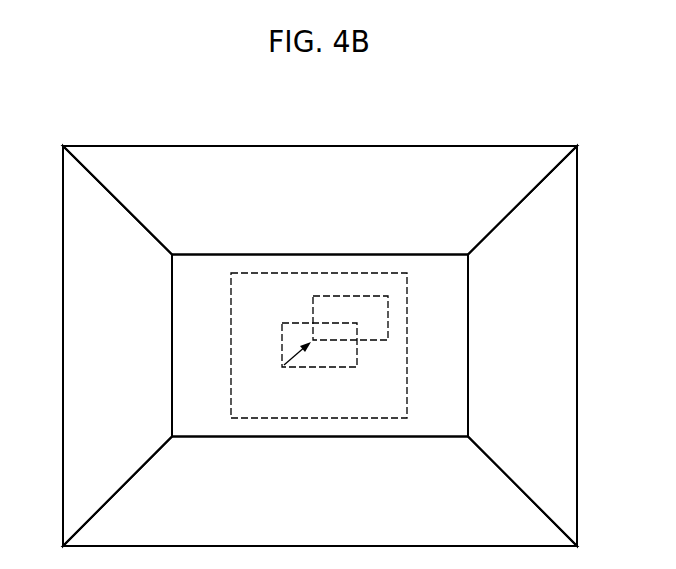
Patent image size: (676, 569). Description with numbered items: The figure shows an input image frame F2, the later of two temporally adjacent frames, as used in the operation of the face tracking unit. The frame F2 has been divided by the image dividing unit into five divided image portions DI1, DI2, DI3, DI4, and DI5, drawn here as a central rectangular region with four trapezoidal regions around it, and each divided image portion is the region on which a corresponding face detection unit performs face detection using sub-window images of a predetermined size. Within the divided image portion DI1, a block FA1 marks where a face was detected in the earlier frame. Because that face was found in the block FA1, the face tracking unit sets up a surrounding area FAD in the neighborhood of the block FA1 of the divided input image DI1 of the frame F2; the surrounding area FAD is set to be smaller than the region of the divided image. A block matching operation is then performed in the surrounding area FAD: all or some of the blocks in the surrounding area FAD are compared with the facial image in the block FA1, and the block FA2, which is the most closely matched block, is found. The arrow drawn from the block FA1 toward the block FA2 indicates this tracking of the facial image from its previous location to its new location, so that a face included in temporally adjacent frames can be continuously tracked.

The input image frame F2 is at (317, 145).
The divided image portion DI1 is at (320, 346).
The divided image portion DI2 is at (320, 200).
The divided image portion DI3 is at (117, 346).
The divided image portion DI4 is at (522, 346).
The divided image portion DI5 is at (320, 492).
The surrounding area FAD is at (378, 272).
The block FA1 is at (282, 365).
The block FA2 is at (388, 328).